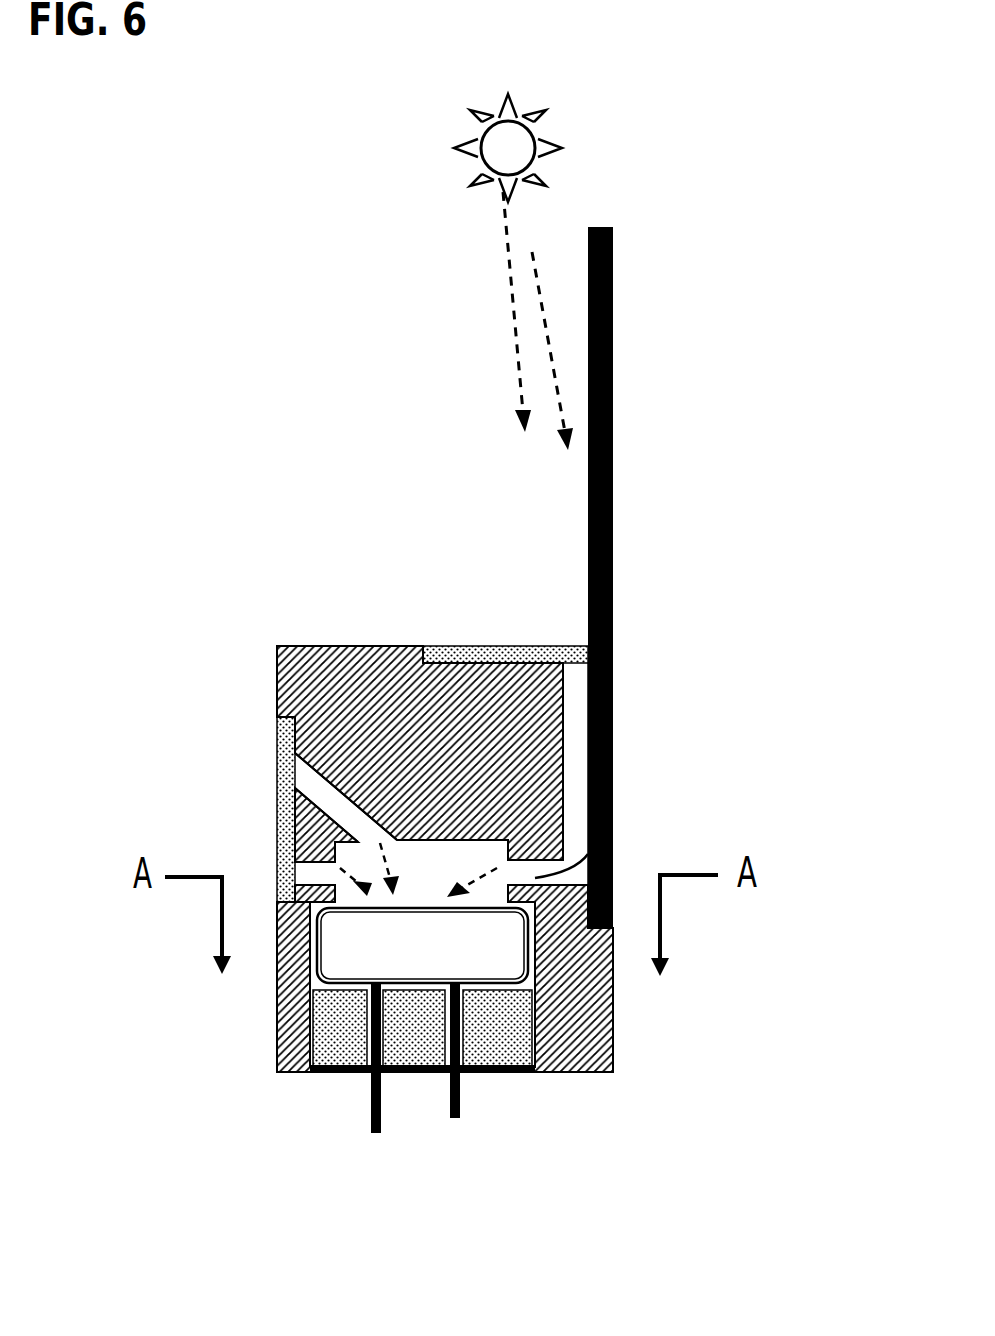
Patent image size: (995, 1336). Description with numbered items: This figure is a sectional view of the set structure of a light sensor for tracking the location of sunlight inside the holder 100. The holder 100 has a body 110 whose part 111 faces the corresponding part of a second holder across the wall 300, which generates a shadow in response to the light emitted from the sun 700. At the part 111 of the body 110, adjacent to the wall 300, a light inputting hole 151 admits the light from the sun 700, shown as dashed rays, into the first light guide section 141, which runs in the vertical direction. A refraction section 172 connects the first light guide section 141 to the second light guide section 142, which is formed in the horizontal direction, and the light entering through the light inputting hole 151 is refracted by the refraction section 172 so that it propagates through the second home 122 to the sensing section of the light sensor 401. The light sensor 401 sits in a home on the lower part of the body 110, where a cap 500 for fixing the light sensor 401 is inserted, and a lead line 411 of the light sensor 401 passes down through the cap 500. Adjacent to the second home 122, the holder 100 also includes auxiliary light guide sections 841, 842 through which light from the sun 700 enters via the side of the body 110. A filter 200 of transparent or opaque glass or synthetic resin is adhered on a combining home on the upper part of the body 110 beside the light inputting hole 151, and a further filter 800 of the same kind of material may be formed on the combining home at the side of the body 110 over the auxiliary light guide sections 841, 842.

The holder 100 is at (365, 513).
The body 110 is at (277, 1040).
The part of the body 111 is at (613, 1020).
The second home 122 is at (433, 860).
The first light guide section 141 is at (573, 762).
The second light guide section 142 is at (613, 803).
The light inputting hole 151 is at (577, 680).
The refraction section 172 is at (613, 872).
The filter 200 is at (482, 647).
The wall 300 is at (613, 485).
The light sensor 401 is at (422, 945).
The lead line 411 is at (371, 1112).
The cap 500 is at (413, 1043).
The sun 700 is at (562, 172).
The filter 800 is at (277, 808).
The auxiliary light guide section 841 is at (340, 800).
The auxiliary light guide section 842 is at (300, 840).